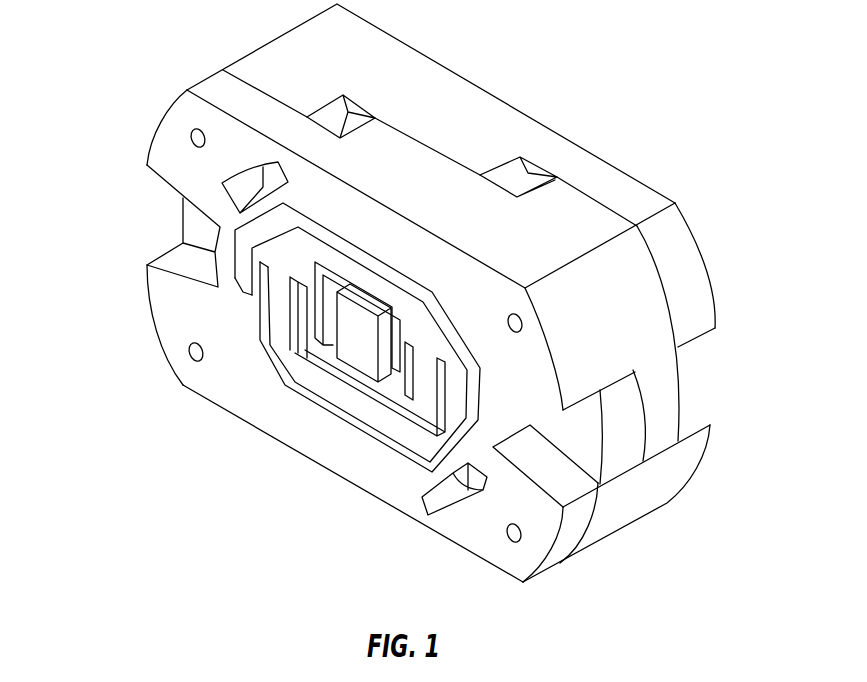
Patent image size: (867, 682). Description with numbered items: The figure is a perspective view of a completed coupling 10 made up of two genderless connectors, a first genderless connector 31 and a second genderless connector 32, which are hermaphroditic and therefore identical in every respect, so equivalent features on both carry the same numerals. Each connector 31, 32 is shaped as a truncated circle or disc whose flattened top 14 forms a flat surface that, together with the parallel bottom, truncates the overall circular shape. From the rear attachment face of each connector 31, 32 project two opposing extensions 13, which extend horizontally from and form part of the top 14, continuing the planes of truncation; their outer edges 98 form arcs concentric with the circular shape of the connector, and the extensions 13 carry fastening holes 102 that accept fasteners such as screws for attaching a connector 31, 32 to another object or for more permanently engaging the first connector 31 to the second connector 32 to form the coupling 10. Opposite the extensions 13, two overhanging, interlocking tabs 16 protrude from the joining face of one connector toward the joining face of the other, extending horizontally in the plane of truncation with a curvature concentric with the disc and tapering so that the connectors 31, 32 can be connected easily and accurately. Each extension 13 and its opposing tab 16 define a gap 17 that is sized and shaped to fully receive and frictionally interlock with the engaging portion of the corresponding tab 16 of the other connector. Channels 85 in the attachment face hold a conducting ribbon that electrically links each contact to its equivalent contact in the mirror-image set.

The coupling 10 is at (661, 111).
The extensions 13 is at (192, 108).
The top edge 14 is at (432, 188).
The interlocking tabs 16 is at (693, 397).
The gap 17 is at (680, 372).
The first genderless connector 31 is at (292, 34).
The second genderless connector 32 is at (222, 84).
The channels 85 is at (365, 432).
The outer edges 98 is at (162, 128).
The fastening holes 102 is at (192, 140).